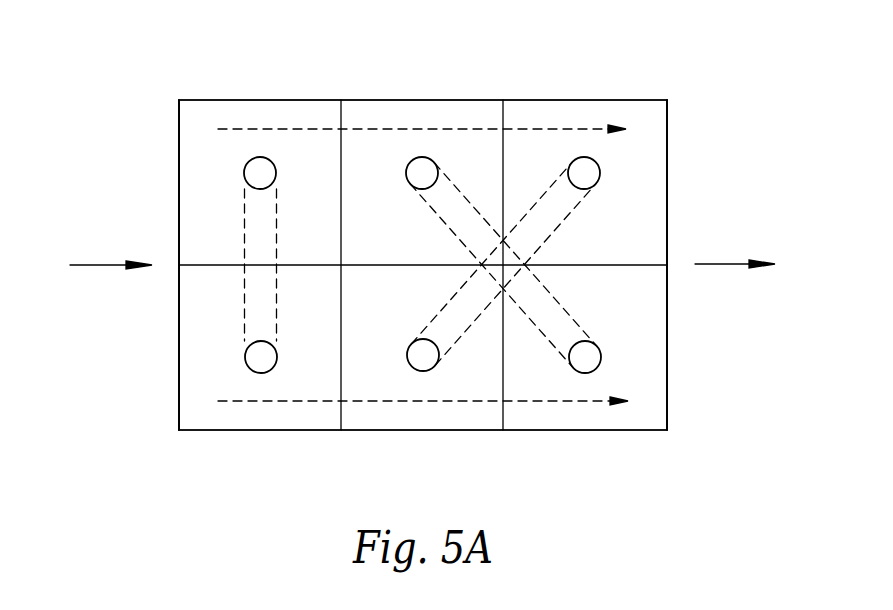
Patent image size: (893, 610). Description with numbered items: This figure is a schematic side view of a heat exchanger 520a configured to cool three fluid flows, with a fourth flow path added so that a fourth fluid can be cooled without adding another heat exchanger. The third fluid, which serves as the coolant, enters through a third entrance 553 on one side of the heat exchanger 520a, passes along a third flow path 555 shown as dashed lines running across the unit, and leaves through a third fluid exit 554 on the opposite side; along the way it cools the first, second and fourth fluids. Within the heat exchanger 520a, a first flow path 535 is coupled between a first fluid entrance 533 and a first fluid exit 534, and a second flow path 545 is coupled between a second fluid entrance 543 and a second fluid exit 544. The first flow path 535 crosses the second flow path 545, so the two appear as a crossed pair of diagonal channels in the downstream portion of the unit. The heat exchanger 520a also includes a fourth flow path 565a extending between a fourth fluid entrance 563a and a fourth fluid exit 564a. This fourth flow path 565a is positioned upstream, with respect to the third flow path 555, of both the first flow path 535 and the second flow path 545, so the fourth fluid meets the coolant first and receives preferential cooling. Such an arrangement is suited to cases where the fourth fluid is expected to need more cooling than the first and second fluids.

The heat exchanger 520a is at (88, 104).
The third entrance 553 is at (180, 402).
The third fluid exit 554 is at (667, 205).
The fourth fluid entrance 563a is at (260, 157).
The fourth fluid exit 564a is at (261, 373).
The fourth flow path 565a is at (244, 213).
The second fluid exit 544 is at (435, 160).
The first fluid entrance 533 is at (423, 371).
The first fluid exit 534 is at (600, 177).
The second fluid entrance 543 is at (601, 358).
The second flow path 545 is at (553, 348).
The first flow path 535 is at (553, 170).
The third flow path 555 is at (416, 129).